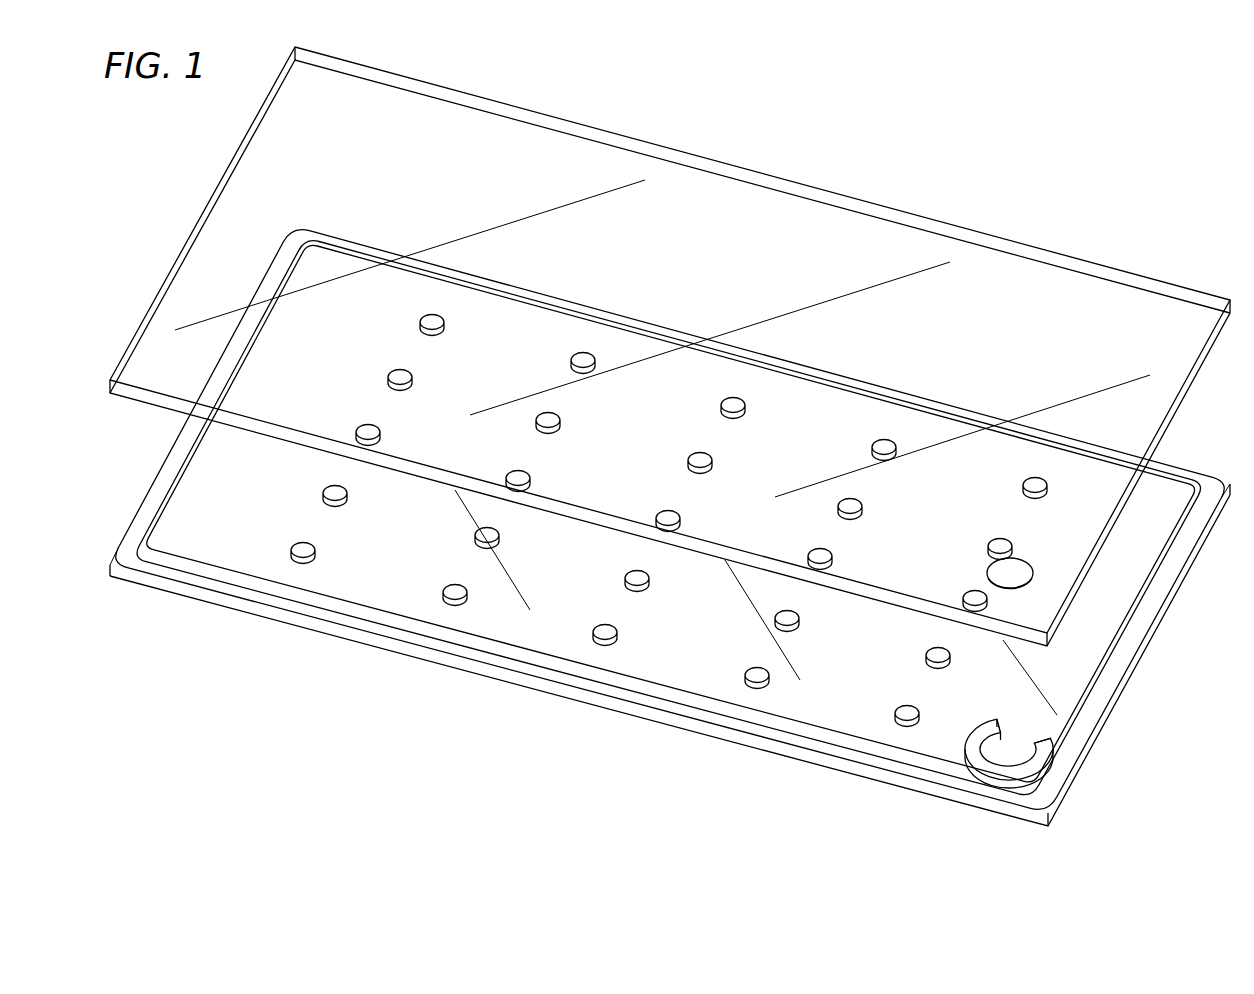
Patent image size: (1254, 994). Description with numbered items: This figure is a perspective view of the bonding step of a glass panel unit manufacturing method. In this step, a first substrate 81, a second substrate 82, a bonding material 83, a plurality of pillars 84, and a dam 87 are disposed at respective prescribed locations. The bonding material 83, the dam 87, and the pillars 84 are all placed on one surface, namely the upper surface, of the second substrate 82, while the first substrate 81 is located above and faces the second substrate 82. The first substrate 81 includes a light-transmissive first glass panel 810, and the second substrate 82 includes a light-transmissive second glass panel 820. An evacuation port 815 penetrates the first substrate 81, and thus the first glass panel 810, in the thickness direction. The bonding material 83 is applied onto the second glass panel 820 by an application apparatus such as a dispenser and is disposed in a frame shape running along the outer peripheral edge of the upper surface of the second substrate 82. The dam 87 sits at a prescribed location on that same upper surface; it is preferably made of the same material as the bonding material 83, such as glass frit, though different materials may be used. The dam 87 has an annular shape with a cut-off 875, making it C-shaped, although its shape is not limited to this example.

The first substrate 81 is at (537, 135).
The first glass panel 810 is at (722, 196).
The evacuation port 815 is at (1016, 571).
The second substrate 82 is at (197, 511).
The second glass panel 820 is at (545, 635).
The bonding material 83 is at (833, 740).
The pillars 84 is at (455, 585).
The dam 87 is at (976, 745).
The cut-off 875 is at (1021, 733).